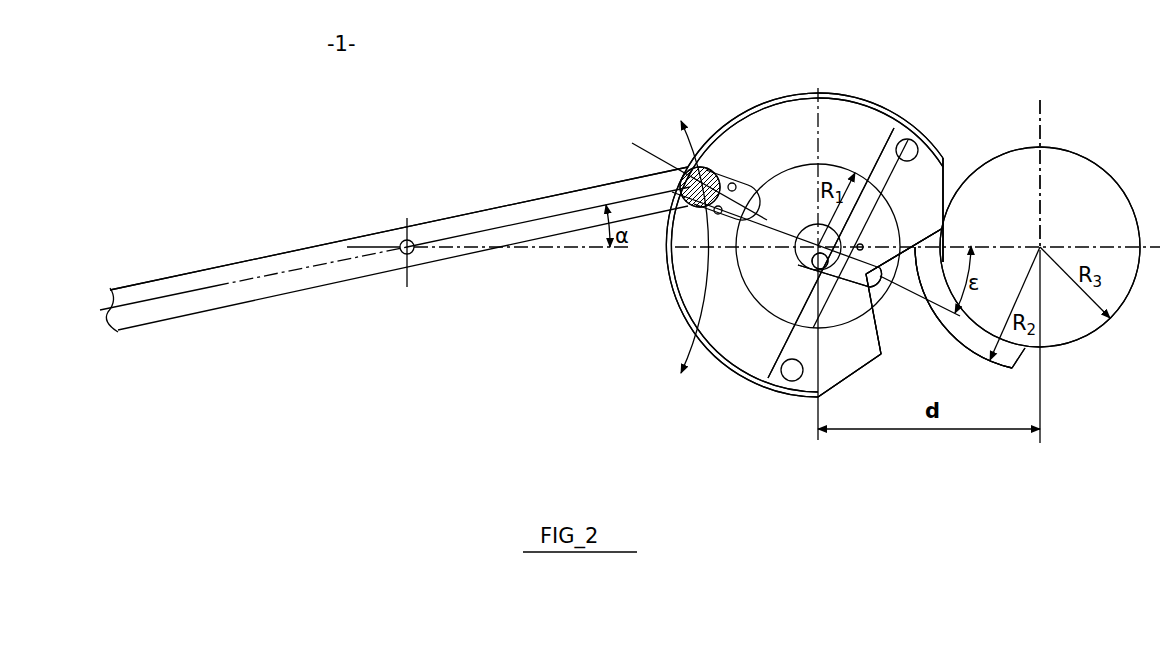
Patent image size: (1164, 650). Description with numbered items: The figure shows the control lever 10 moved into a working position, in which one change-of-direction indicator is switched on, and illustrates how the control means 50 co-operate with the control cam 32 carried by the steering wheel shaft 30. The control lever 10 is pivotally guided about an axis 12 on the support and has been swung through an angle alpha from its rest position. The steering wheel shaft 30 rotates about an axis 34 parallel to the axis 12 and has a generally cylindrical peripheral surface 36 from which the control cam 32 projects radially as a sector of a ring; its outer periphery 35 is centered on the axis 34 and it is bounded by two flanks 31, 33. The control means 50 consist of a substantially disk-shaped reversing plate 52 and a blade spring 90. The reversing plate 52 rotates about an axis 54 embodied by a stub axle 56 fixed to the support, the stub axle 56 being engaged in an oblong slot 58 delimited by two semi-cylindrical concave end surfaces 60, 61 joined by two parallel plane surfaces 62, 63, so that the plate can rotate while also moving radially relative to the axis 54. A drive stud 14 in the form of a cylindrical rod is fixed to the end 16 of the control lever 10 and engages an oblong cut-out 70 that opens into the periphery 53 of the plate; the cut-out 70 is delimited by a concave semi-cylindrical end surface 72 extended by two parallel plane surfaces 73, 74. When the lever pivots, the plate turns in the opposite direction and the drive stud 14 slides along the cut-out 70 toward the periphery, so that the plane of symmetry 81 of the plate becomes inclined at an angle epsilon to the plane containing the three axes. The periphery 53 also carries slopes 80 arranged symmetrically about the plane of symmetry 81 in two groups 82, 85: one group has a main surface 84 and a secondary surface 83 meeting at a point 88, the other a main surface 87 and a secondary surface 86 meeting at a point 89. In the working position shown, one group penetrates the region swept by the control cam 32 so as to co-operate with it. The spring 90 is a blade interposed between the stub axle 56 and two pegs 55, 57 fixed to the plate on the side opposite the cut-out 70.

The control lever 10 is at (166, 292).
The pivot axis 12 is at (405, 240).
The drive stud 14 is at (697, 157).
The end of the control lever 16 is at (600, 168).
The steering wheel shaft 30 is at (1063, 172).
The flank of the control cam 31 is at (922, 236).
The control cam 32 is at (955, 249).
The flank of the control cam 33 is at (1030, 355).
The shaft axis 34 is at (1043, 245).
The periphery of the control cam 35 is at (1000, 368).
The peripheral surface of the steering wheel shaft 36 is at (1110, 165).
The control means 50 is at (735, 72).
The reversing plate 52 is at (772, 105).
The periphery of the reversing plate 53 is at (672, 308).
The plate axis 54 is at (815, 262).
The peg 55 is at (907, 140).
The stub axle 56 is at (800, 240).
The peg 57 is at (792, 382).
The oblong slot 58 is at (865, 278).
The semi-cylindrical concave end surface 60 is at (810, 229).
The semi-cylindrical concave end surface 61 is at (862, 285).
The plane surface 62 is at (880, 166).
The plane surface 63 is at (823, 269).
The oblong cut-out 70 is at (712, 245).
The concave semi-cylindrical end surface 72 is at (738, 182).
The plane surface 73 is at (717, 214).
The plane surface 74 is at (724, 168).
The slopes 80 is at (940, 352).
The plane of symmetry 81 is at (632, 143).
The group of slopes 82 is at (948, 175).
The secondary surface 83 is at (948, 192).
The main surface 84 is at (877, 292).
The group of slopes 85 is at (876, 372).
The secondary surface 86 is at (848, 386).
The main surface 87 is at (880, 330).
The meeting point 88 is at (945, 228).
The meeting point 89 is at (881, 356).
The spring 90 is at (882, 165).